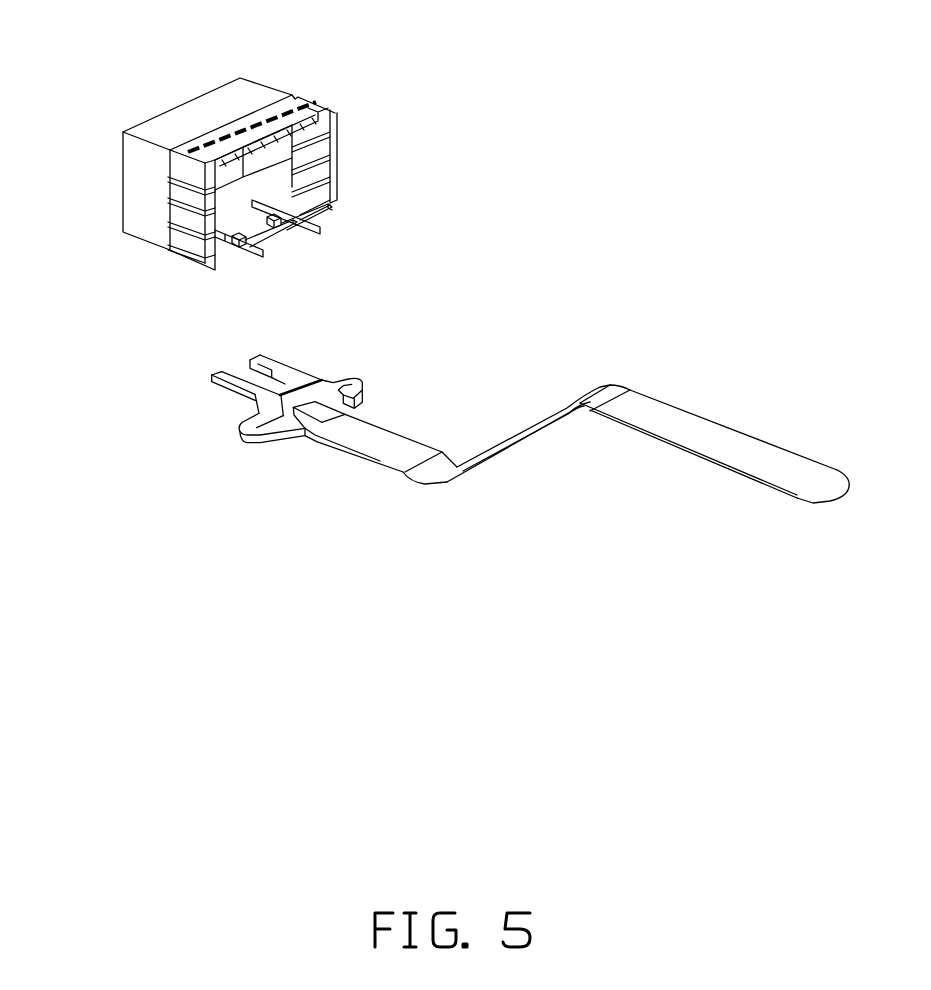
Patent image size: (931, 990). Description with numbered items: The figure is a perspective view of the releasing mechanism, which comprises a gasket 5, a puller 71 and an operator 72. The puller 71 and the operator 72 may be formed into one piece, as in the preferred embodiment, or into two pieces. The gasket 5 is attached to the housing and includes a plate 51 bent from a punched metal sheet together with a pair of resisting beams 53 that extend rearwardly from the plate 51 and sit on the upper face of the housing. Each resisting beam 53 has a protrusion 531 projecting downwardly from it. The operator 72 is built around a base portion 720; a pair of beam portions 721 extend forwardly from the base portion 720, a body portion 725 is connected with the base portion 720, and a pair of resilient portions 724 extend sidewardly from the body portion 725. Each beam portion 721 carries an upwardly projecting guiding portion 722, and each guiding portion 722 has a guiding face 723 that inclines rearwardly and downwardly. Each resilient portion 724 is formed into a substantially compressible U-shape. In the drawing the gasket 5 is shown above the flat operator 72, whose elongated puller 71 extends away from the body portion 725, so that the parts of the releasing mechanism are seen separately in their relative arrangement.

The gasket 5 is at (310, 83).
The plate 51 is at (220, 108).
The resisting beam 53 is at (253, 244).
The protrusion 531 is at (258, 208).
The operator 72 is at (287, 380).
The base portion 720 is at (245, 402).
The beam portion 721 is at (243, 382).
The guiding portion 722 is at (225, 378).
The guiding face 723 is at (225, 385).
The resilient portion 724 is at (331, 383).
The body portion 725 is at (332, 417).
The puller 71 is at (692, 432).